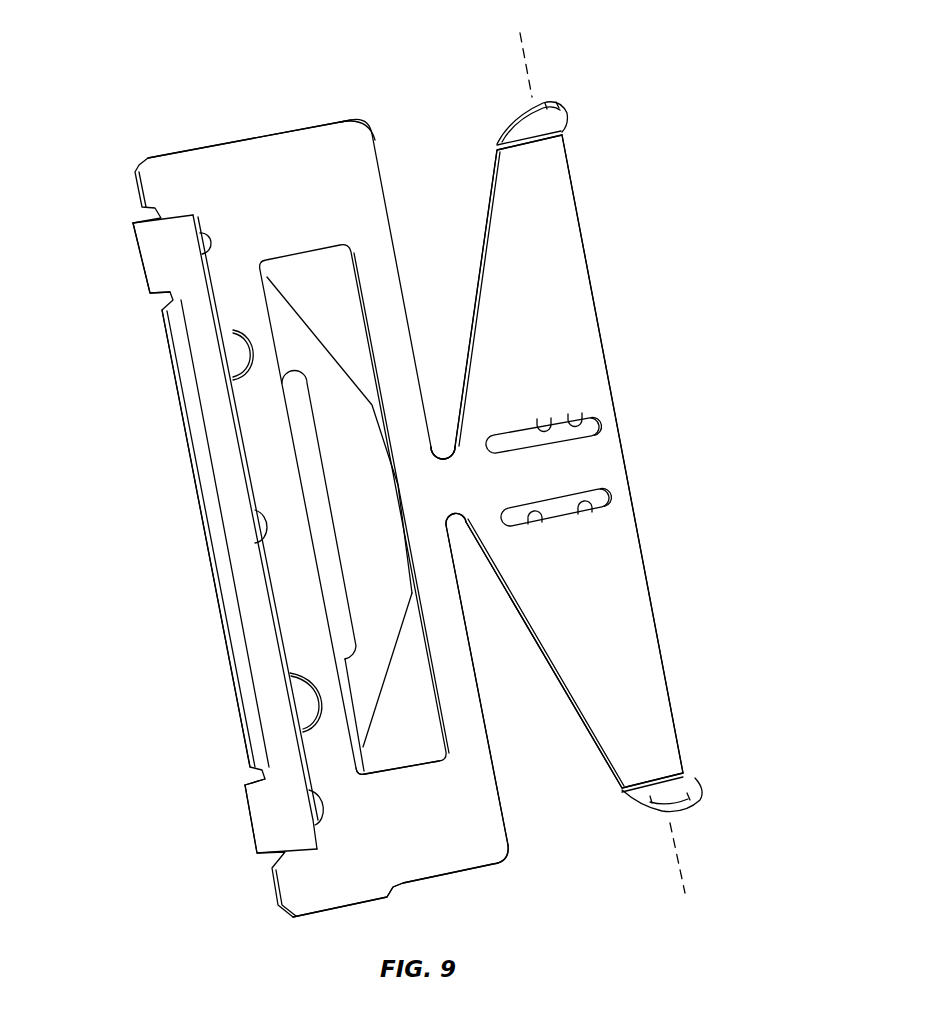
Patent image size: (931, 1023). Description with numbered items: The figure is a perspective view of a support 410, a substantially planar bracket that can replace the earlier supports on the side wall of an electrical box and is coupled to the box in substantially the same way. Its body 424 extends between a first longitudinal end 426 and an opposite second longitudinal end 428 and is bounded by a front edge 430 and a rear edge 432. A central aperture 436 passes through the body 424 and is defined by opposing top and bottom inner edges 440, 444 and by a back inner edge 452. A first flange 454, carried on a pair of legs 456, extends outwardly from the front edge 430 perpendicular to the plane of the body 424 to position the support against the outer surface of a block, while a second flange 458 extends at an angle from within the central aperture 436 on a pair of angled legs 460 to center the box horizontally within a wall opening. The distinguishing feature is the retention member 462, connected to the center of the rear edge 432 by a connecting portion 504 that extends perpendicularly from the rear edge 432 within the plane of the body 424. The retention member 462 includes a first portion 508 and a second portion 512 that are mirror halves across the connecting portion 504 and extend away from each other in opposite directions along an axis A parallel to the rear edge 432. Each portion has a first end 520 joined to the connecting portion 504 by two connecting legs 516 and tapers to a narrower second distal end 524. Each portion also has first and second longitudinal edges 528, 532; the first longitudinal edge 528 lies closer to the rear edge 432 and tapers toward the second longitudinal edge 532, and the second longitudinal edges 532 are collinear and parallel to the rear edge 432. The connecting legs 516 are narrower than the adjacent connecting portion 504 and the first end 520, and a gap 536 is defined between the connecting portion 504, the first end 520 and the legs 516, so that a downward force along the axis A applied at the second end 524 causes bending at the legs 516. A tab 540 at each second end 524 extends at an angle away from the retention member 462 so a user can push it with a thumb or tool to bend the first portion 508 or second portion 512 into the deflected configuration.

The support 410 is at (266, 73).
The body 424 is at (325, 142).
The first longitudinal end 426 is at (205, 140).
The second longitudinal end 428 is at (450, 877).
The front edge 430 is at (200, 493).
The rear edge 432 is at (498, 787).
The central aperture 436 is at (290, 299).
The top inner edge 440 is at (293, 258).
The bottom inner edge 444 is at (388, 765).
The back inner edge 452 is at (352, 318).
The first flange 454 is at (253, 630).
The legs 456 is at (153, 245).
The second flange 458 is at (377, 590).
The angled legs 460 is at (295, 333).
The retention member 462 is at (632, 447).
The connecting portion 504 is at (553, 467).
The first portion 508 is at (543, 260).
The second portion 512 is at (630, 697).
The connecting legs 516 is at (468, 440).
The first end 520 is at (580, 420).
The second distal end 524 is at (558, 97).
The first longitudinal edge 528 is at (480, 253).
The second longitudinal edge 532 is at (597, 323).
The gap 536 is at (548, 422).
The tab 540 is at (548, 122).
The axis A is at (528, 53).